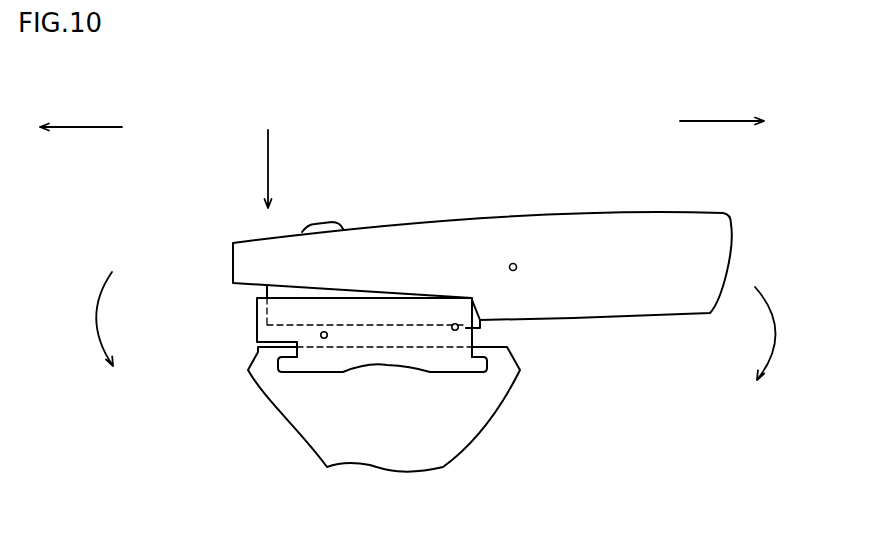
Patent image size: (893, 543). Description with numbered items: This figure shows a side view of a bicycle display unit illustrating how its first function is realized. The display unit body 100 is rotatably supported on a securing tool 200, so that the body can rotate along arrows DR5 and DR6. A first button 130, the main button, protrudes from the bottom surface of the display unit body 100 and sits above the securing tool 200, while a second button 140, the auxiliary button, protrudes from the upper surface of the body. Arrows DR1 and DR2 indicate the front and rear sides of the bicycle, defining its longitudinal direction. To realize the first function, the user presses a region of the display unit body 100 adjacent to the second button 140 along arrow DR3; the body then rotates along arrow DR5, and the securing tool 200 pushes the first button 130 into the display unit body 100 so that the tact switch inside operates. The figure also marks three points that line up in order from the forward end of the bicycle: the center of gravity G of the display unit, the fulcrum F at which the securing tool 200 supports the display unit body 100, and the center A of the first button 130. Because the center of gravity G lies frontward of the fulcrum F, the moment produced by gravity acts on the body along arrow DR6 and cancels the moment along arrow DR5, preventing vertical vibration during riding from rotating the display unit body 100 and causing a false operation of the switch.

The display unit body 100 is at (230, 232).
The second button 140 is at (323, 222).
The first button 130 is at (320, 336).
The securing tool 200 is at (381, 377).
The center of first button A is at (315, 347).
The fulcrum of securing tool F is at (457, 343).
The center of gravity of display unit G is at (528, 258).
The arrow DR1 is at (720, 120).
The arrow DR2 is at (84, 125).
The arrow DR3 is at (268, 158).
The arrow DR5 is at (90, 318).
The arrow DR6 is at (778, 332).